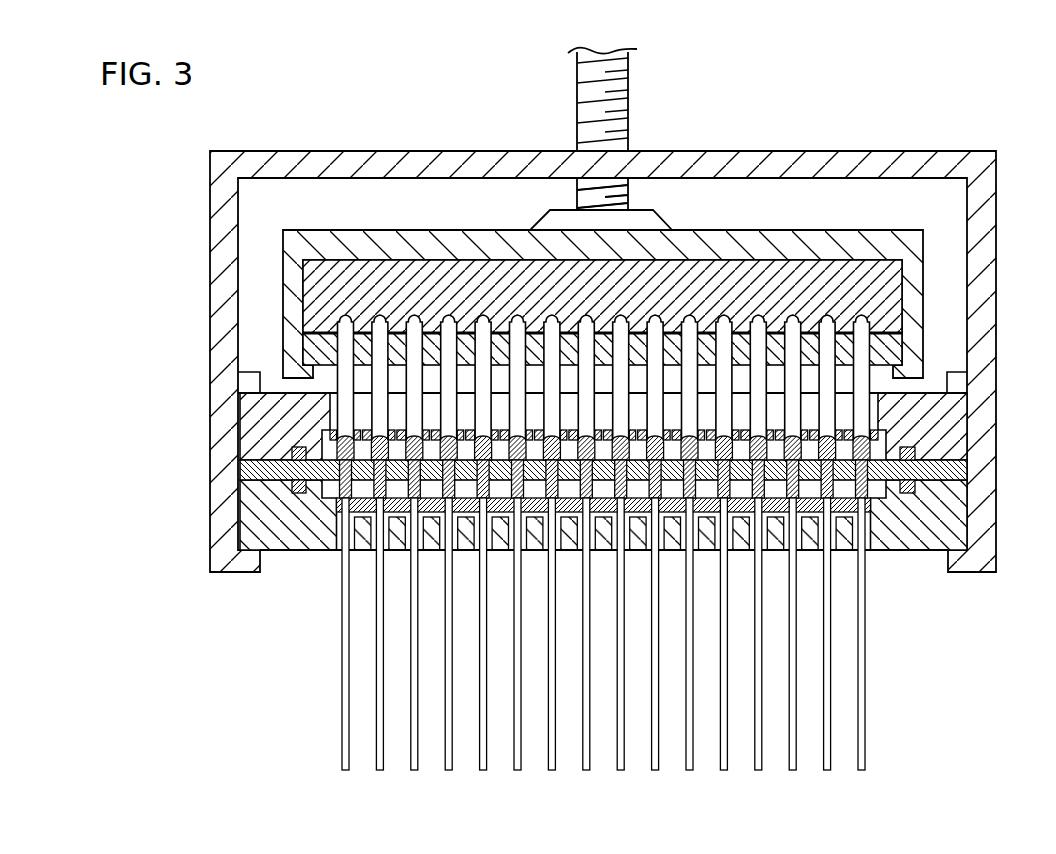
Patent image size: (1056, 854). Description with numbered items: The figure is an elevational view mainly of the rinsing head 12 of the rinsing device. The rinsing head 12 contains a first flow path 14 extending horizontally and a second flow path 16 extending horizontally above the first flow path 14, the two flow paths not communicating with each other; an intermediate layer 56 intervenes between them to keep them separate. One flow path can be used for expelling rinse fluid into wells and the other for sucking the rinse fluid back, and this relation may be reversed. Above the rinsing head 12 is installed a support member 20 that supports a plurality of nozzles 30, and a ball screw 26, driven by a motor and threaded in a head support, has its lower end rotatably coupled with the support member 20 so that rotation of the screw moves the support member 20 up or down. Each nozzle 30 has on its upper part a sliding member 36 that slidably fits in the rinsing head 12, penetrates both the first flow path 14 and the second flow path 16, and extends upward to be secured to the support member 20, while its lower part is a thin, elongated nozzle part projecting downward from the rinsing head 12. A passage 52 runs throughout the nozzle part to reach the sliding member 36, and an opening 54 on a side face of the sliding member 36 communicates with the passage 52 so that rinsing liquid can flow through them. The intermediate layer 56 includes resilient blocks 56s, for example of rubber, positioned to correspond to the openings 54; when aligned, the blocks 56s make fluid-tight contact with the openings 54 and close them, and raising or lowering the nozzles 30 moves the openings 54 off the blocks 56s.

The rinsing head 12 is at (273, 603).
The first flow path 14 is at (880, 502).
The second flow path 16 is at (880, 457).
The support member 20 is at (258, 233).
The ball screw 26 is at (577, 75).
The nozzle 30 is at (831, 742).
The sliding member 36 is at (853, 380).
The passage 52 is at (828, 771).
The opening 54 is at (883, 450).
The intermediate layer 56 is at (950, 470).
The block 56s is at (918, 486).